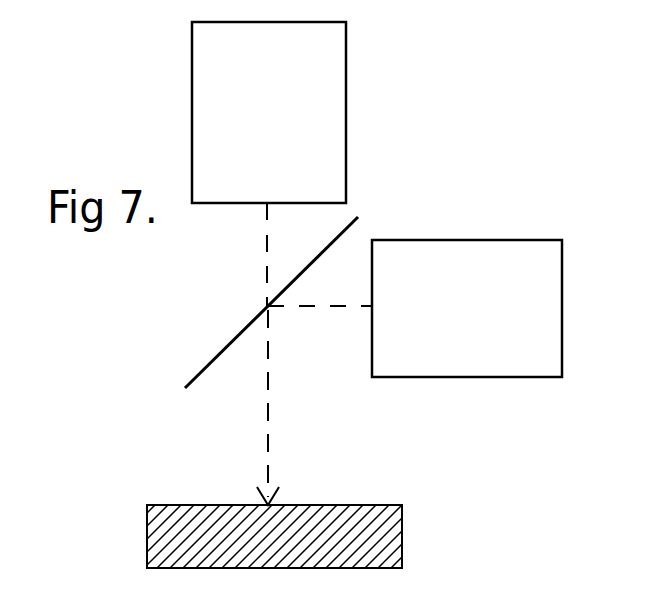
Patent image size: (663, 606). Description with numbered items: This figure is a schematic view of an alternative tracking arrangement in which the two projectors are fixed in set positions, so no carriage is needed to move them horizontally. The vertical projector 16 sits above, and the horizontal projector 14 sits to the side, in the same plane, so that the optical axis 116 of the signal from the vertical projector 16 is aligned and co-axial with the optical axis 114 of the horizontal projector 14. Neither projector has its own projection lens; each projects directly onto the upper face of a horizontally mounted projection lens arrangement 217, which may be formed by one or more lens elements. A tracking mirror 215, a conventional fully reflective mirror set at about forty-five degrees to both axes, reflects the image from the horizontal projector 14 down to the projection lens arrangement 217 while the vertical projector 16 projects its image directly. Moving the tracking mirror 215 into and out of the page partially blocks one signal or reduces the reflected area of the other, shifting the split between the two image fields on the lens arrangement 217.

The vertical projector 16 is at (283, 94).
The horizontal projector 14 is at (493, 263).
The tracking mirror 215 is at (335, 269).
The optical axis of the vertical projector 116 is at (267, 280).
The optical axis of the horizontal projector 114 is at (308, 307).
The projection lens arrangement 217 is at (402, 523).